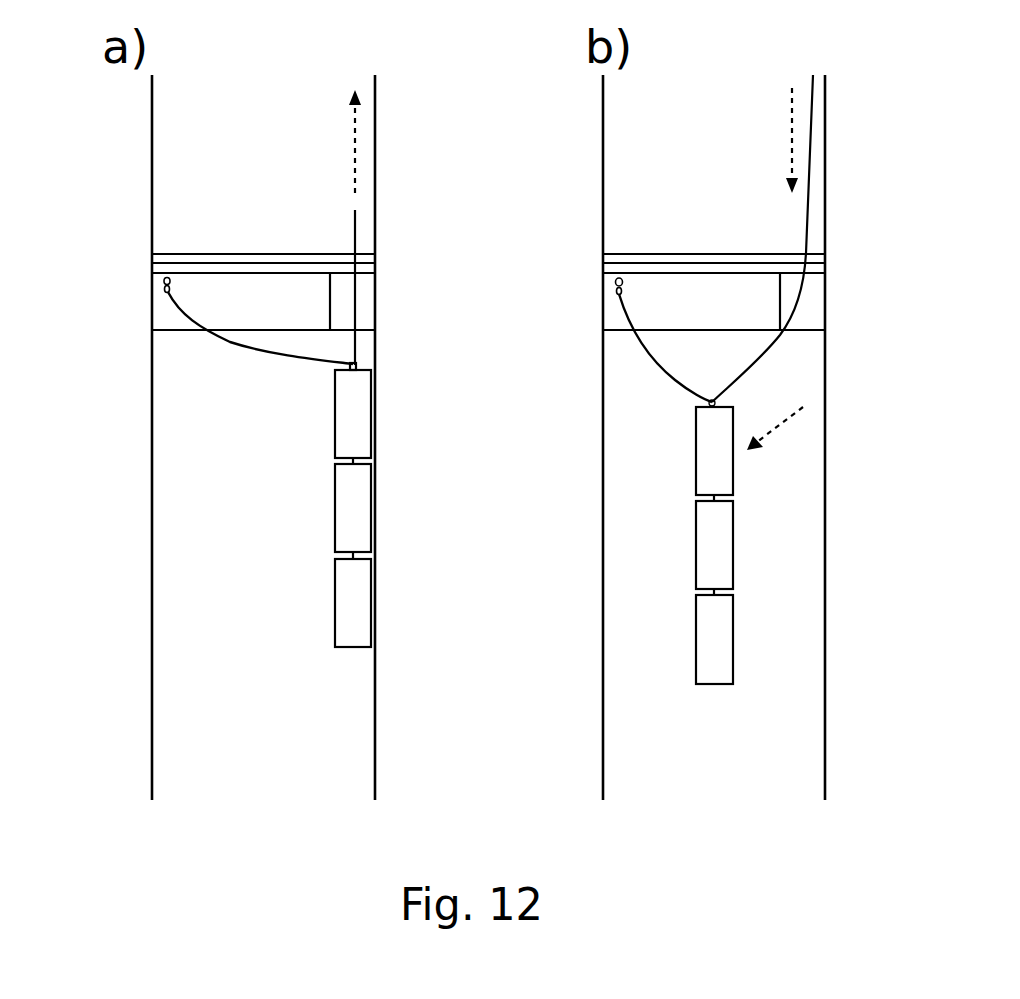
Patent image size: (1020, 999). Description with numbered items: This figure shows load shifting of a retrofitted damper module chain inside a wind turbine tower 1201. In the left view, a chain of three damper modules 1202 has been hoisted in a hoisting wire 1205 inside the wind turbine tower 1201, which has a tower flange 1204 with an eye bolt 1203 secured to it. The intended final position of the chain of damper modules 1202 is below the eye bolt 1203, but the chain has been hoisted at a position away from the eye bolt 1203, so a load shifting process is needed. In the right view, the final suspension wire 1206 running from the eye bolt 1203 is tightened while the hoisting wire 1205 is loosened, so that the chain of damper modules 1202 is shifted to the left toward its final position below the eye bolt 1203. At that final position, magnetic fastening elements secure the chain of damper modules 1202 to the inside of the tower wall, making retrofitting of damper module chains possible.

The wind turbine tower 1201 is at (152, 480).
The damper modules 1202 is at (357, 427).
The eye bolt 1203 is at (160, 283).
The tower flange 1204 is at (152, 265).
The hoisting wire 1205 is at (355, 304).
The final suspension wire 1206 is at (242, 343).